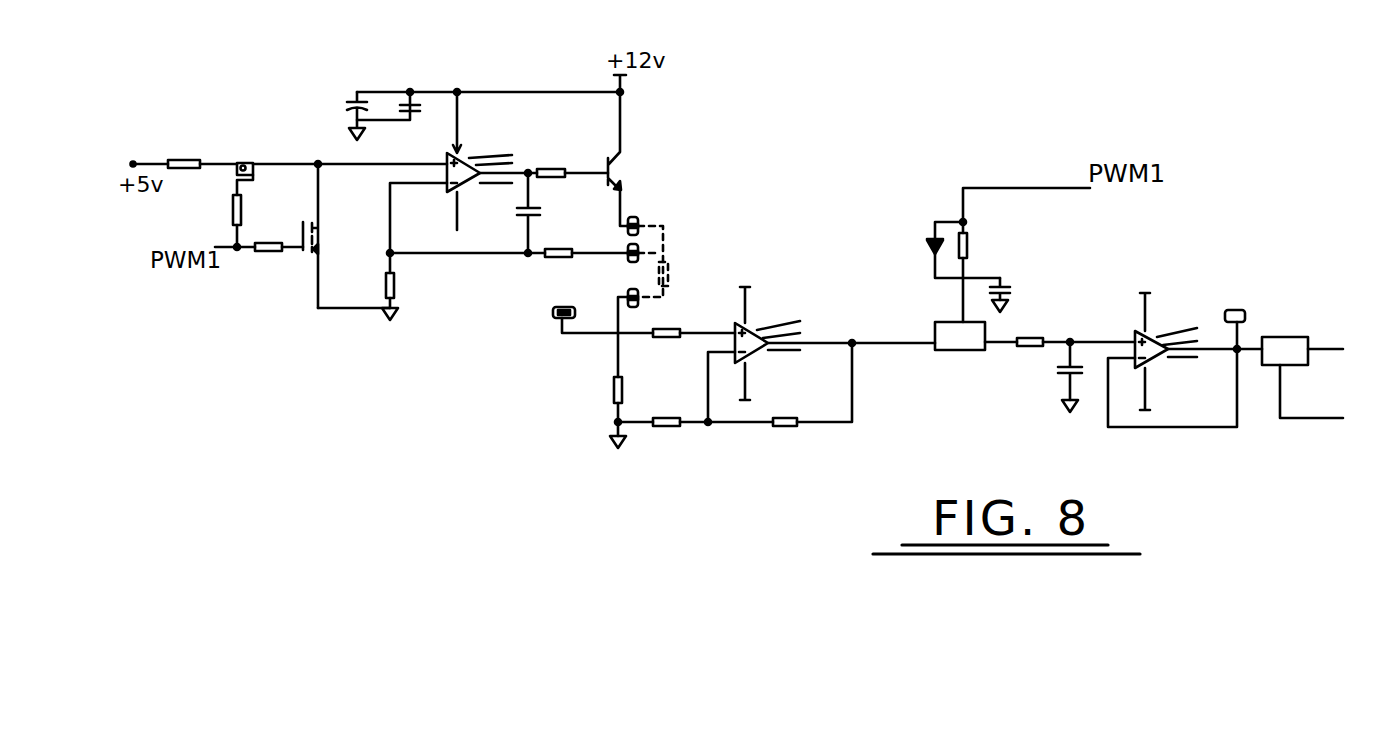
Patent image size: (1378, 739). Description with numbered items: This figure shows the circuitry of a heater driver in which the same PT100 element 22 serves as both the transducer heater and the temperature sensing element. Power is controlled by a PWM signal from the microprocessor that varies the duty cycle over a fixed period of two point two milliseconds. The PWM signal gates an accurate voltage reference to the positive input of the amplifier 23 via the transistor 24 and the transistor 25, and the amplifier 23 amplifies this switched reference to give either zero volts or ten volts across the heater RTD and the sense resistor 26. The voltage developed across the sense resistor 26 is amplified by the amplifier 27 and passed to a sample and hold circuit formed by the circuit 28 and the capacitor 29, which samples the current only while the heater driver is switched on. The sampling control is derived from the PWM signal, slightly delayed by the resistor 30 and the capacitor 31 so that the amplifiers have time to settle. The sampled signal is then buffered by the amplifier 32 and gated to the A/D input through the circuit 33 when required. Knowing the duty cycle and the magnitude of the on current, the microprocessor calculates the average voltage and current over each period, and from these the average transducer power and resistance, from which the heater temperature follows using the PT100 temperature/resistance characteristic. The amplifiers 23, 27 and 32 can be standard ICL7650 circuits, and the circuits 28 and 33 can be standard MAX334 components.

The PT100 element 22 is at (667, 280).
The amplifier 23 is at (466, 176).
The transistor 24 is at (312, 254).
The transistor 25 is at (247, 162).
The sense resistor 26 is at (612, 387).
The amplifier 27 is at (753, 348).
The circuit 28 is at (940, 340).
The capacitor 29 is at (1060, 383).
The resistor 30 is at (968, 245).
The capacitor 31 is at (1013, 292).
The amplifier 32 is at (1158, 355).
The circuit 33 is at (1286, 342).